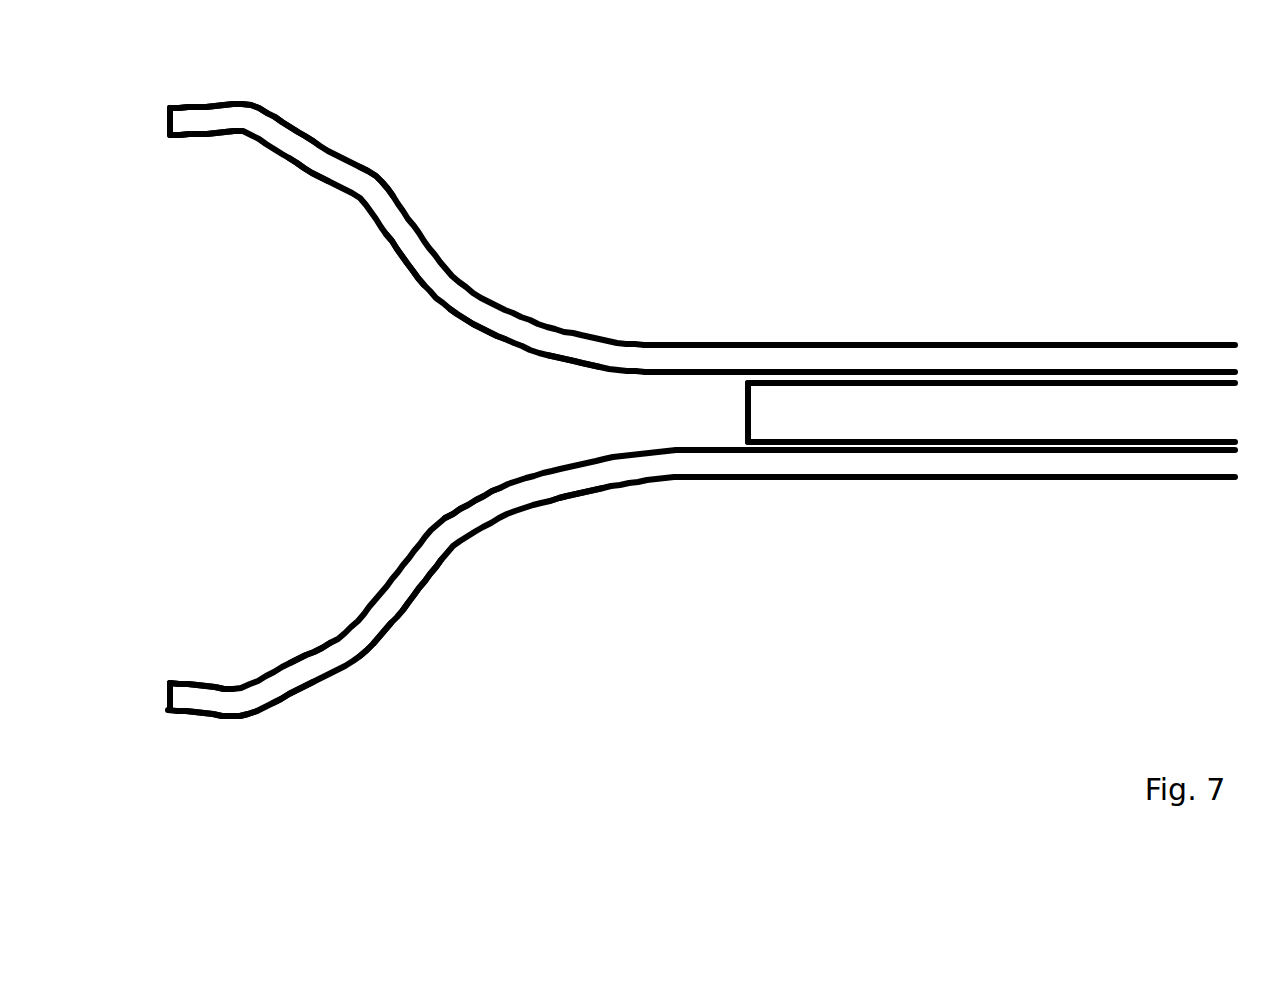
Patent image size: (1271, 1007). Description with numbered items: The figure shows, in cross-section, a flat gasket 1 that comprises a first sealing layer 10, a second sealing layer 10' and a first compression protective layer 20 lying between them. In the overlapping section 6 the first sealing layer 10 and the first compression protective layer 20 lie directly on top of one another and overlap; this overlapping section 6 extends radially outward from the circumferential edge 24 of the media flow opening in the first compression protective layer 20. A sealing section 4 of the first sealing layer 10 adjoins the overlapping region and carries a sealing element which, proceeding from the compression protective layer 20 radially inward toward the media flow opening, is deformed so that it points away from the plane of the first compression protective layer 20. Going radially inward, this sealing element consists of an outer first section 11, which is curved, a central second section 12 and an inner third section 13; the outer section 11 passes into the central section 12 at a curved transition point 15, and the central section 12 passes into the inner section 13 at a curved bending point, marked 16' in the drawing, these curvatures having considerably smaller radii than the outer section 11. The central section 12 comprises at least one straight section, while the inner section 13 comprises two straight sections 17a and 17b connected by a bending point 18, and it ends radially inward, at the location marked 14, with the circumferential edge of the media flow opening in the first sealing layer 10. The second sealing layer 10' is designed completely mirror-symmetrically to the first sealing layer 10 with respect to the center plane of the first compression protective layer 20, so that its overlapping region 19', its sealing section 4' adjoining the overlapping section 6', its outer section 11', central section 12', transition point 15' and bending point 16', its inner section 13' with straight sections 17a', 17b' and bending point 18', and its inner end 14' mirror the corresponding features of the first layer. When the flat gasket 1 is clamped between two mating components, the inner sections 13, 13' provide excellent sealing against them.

The flat gasket 1 is at (1174, 246).
The sealing section 4 is at (446, 641).
The spring arm 4' is at (450, 238).
The overlapping section 6 is at (991, 540).
The leg 6' is at (880, 295).
The first sealing layer 10 is at (982, 463).
The second sealing layer 10' is at (982, 358).
The outer first section 11 is at (578, 513).
The transition section 11' is at (580, 316).
The central second section 12 is at (454, 585).
The inclined section 12' is at (434, 228).
The inner third section 13 is at (302, 721).
The inner section 13' is at (304, 98).
The free end 14 is at (156, 657).
The free end 14' is at (151, 151).
The curved transition point 15 is at (469, 482).
The curved section 15' is at (471, 352).
The bend 16' is at (397, 416).
The straight section 17a is at (299, 620).
The end portion 17a' is at (301, 200).
The straight section 17b is at (198, 670).
The end portion 17b' is at (207, 156).
The bending point 18 is at (242, 750).
The end section 18' is at (253, 75).
The outer surface 19' is at (1071, 399).
The first compression protective layer 20 is at (1039, 422).
The circumferential edge 24 is at (745, 419).